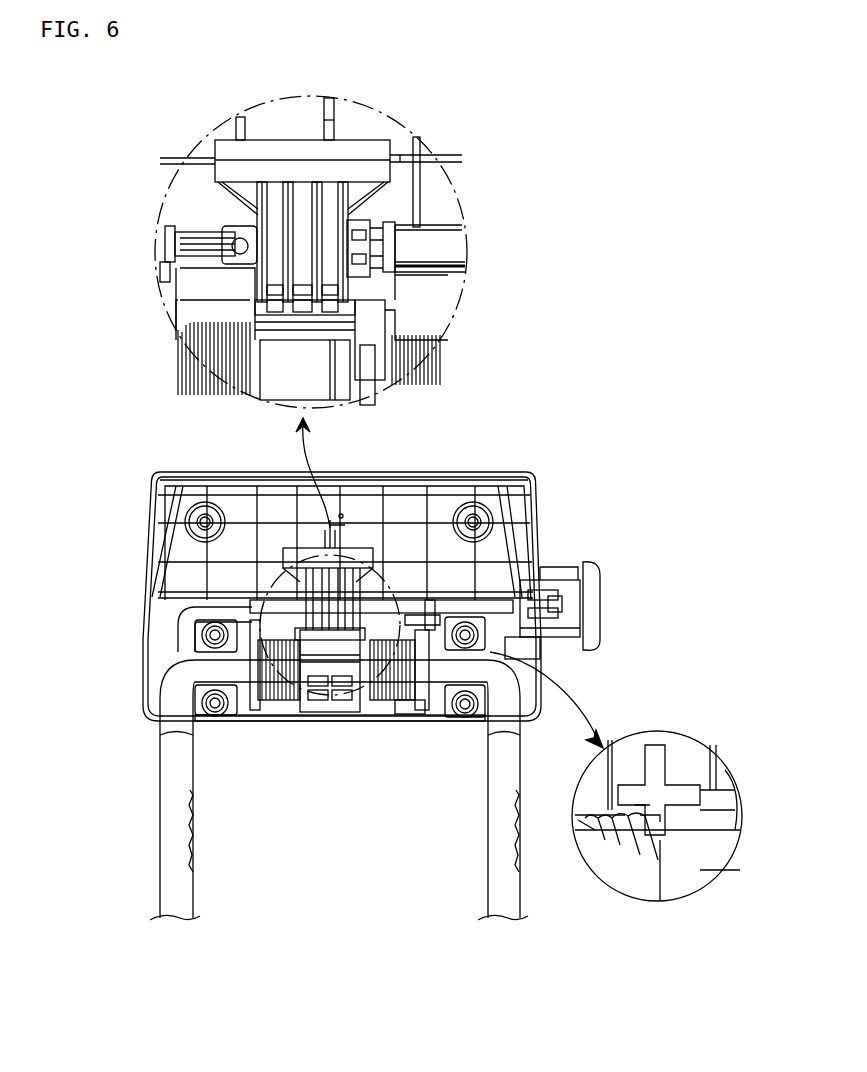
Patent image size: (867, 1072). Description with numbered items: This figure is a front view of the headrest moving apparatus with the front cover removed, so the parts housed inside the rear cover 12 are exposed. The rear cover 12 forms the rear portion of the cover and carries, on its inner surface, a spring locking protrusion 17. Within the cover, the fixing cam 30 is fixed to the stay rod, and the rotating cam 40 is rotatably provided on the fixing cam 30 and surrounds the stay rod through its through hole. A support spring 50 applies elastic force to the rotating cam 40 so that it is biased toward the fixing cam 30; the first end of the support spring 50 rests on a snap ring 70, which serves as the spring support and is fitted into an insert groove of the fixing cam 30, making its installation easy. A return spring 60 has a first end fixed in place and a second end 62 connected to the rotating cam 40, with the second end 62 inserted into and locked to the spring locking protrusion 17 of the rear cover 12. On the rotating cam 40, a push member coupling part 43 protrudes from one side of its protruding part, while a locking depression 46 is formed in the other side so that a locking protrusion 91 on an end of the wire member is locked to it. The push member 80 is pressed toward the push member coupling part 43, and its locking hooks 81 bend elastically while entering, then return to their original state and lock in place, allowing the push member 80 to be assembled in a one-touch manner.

The rear cover 12 is at (455, 482).
The spring locking protrusion 17 is at (662, 827).
The fixing cam 30 is at (425, 703).
The rotating cam 40 is at (296, 136).
The push member coupling part 43 is at (377, 227).
The locking depression 46 is at (258, 215).
The support spring 50 is at (292, 700).
The return spring 60 is at (388, 703).
The second end of the return spring 62 is at (642, 817).
The snap ring 70 is at (260, 703).
The push member 80 is at (578, 556).
The locking hooks 81 is at (367, 252).
The locking protrusion 91 is at (235, 248).